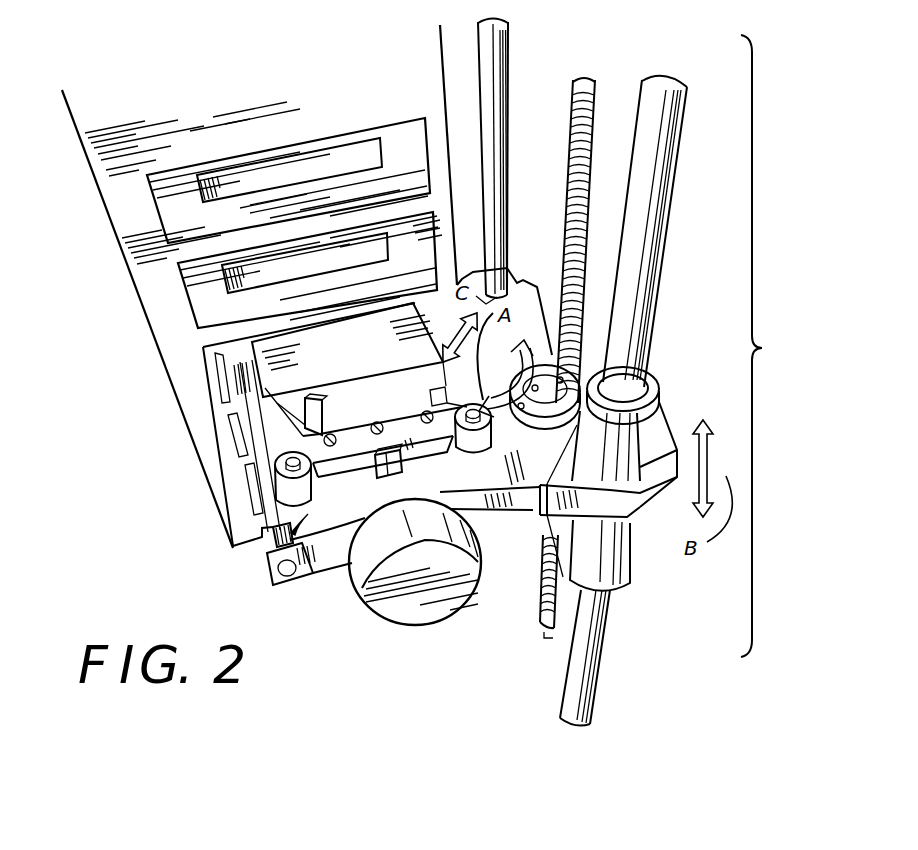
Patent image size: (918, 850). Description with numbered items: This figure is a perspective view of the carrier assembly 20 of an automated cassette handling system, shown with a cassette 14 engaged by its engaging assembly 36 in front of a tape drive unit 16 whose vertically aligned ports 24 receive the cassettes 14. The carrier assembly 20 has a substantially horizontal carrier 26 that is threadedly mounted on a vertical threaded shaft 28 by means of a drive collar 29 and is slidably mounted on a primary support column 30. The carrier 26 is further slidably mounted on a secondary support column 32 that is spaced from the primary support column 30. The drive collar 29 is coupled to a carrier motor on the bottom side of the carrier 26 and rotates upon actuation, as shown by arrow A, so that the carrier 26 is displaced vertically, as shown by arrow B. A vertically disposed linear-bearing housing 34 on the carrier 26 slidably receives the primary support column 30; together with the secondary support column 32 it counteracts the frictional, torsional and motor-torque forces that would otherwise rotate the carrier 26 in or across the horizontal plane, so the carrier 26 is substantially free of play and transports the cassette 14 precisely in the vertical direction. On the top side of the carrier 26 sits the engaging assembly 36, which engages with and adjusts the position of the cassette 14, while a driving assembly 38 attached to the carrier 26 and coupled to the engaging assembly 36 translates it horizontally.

The cassette 14 is at (334, 367).
The tape drive unit 16 is at (183, 190).
The carrier assembly 20 is at (774, 346).
The port 24 is at (302, 168).
The carrier 26 is at (332, 552).
The threaded shaft 28 is at (587, 103).
The drive collar 29 is at (543, 410).
The primary support column 30 is at (657, 202).
The secondary support column 32 is at (500, 85).
The linear-bearing housing 34 is at (613, 575).
The engaging assembly 36 is at (300, 536).
The driving assembly 38 is at (390, 633).